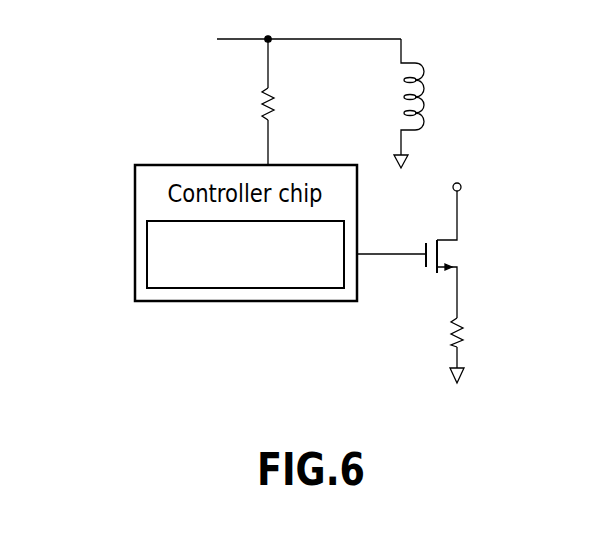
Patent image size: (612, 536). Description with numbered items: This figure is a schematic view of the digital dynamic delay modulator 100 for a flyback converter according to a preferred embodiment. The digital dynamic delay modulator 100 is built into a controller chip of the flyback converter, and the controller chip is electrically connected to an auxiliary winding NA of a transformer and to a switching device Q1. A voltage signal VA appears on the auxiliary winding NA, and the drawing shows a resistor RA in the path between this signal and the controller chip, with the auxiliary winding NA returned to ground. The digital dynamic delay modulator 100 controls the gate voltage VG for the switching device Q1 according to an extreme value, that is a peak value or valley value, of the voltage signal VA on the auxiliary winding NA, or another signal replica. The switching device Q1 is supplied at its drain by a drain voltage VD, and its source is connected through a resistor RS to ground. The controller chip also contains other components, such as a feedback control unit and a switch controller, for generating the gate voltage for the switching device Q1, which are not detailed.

The digital dynamic delay modulator 100 is at (147, 252).
The switching device Q1 is at (459, 254).
The auxiliary resistor RA is at (286, 102).
The sense resistor RS is at (472, 350).
The auxiliary winding NA is at (426, 103).
The voltage signal VA is at (309, 23).
The drain voltage VD is at (458, 172).
The gate signal VG is at (391, 241).